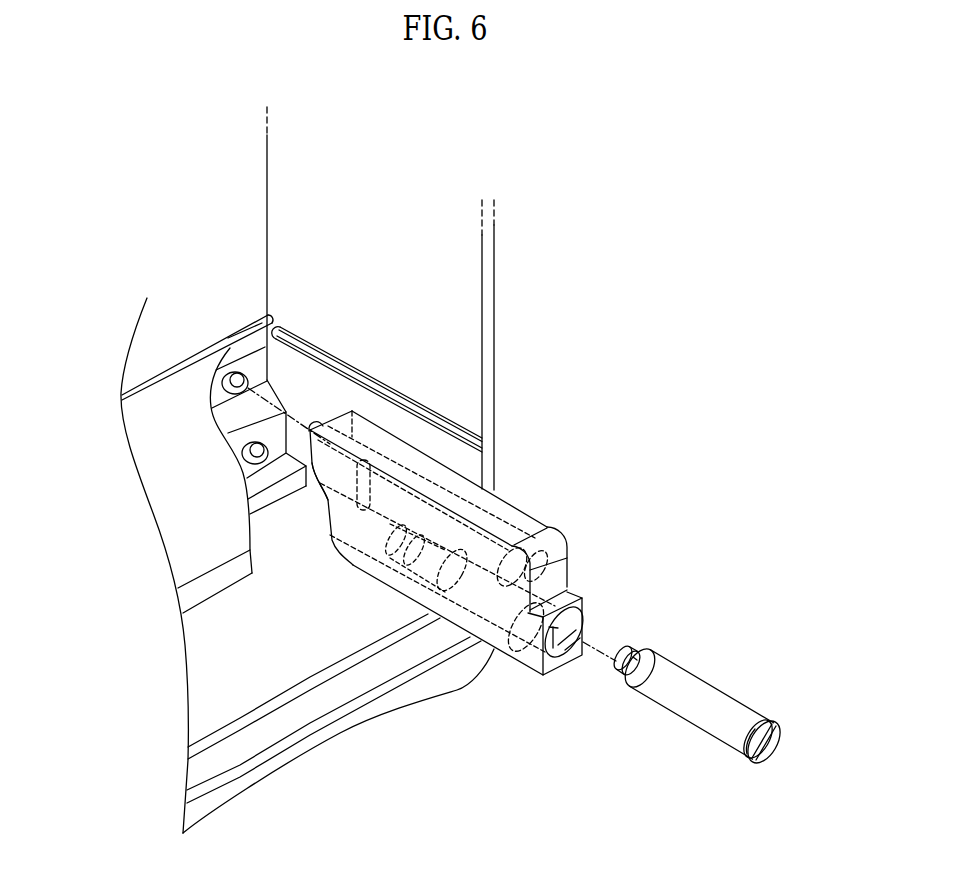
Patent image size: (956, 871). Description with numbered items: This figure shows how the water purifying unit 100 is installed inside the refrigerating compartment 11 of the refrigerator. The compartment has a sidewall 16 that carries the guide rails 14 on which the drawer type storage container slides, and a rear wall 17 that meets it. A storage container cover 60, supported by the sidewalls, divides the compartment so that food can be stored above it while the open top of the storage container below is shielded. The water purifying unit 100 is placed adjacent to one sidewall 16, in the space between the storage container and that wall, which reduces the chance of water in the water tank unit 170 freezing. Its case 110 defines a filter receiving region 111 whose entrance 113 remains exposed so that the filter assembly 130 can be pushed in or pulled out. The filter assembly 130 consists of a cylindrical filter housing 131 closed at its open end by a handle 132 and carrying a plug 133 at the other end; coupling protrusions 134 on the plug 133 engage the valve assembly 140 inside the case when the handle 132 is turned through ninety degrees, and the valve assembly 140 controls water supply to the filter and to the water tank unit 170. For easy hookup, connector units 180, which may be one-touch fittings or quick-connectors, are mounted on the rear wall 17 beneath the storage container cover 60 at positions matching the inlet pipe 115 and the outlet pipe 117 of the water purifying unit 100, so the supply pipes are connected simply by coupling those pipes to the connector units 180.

The refrigerating compartment 11 is at (150, 410).
The guide rails 14 is at (414, 404).
The sidewall 16 is at (462, 298).
The rear wall 17 is at (178, 313).
The storage container cover 60 is at (170, 508).
The water purifying unit 100 is at (462, 544).
The case 110 is at (528, 518).
The filter receiving region 111 is at (553, 657).
The entrance 113 is at (583, 614).
The inlet pipe 115 is at (315, 493).
The outlet pipe 117 is at (313, 426).
The filter assembly 130 is at (708, 690).
The filter housing 131 is at (683, 710).
The handle 132 is at (782, 748).
The plug 133 is at (626, 655).
The coupling protrusions 134 is at (624, 675).
The valve assembly 140 is at (427, 565).
The water tank unit 170 is at (472, 507).
The connector units 180 is at (244, 374).